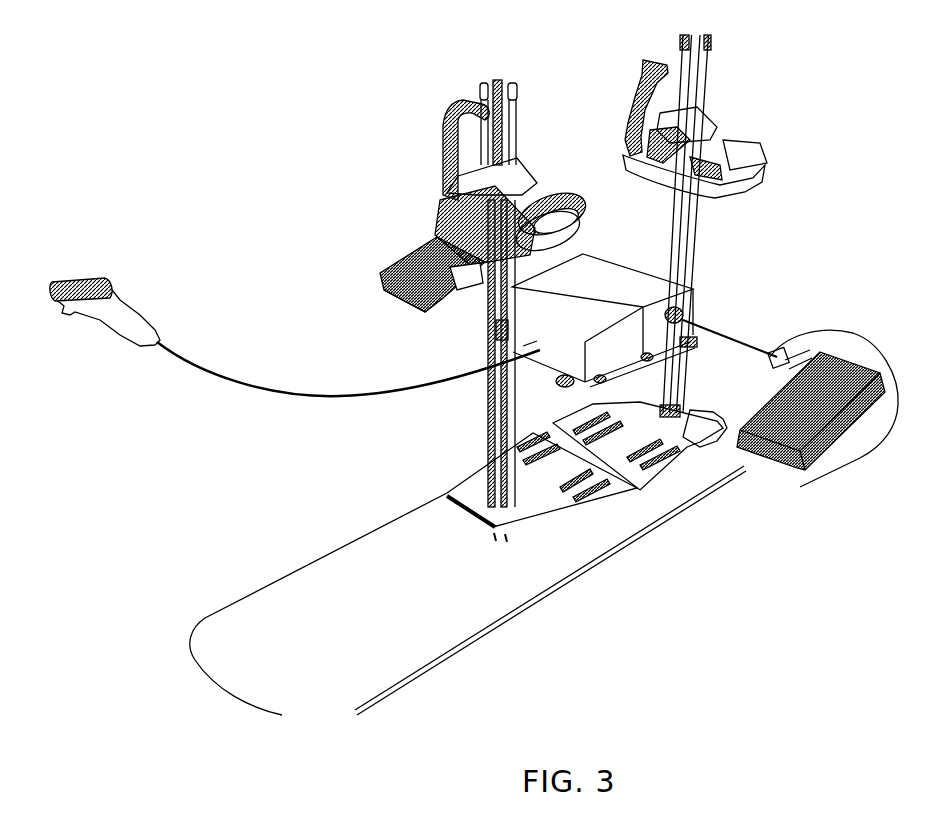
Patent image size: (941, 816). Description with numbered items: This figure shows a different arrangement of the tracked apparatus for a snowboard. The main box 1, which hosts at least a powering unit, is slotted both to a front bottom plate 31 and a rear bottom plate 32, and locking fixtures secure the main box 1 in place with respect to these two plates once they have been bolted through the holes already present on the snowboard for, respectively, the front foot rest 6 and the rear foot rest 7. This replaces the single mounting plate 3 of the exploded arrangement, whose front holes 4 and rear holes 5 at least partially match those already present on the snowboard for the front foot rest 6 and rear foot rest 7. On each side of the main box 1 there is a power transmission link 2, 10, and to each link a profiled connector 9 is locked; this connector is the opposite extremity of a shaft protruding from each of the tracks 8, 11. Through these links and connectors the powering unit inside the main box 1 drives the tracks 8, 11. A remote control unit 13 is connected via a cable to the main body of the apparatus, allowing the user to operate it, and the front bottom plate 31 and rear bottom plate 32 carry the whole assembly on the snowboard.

The main box 1 is at (600, 268).
The power transmission link 2 is at (683, 312).
The mounting plate 3 is at (498, 293).
The front holes 4 is at (511, 511).
The rear holes 5 is at (723, 430).
The front foot rest 6 is at (438, 228).
The rear foot rest 7 is at (725, 150).
The track 8 is at (858, 352).
The profiled connector 9 is at (687, 380).
The power transmission link 10 is at (685, 226).
The track 11 is at (381, 274).
The remote control unit 13 is at (106, 280).
The front bottom plate 31 is at (566, 505).
The rear bottom plate 32 is at (683, 442).